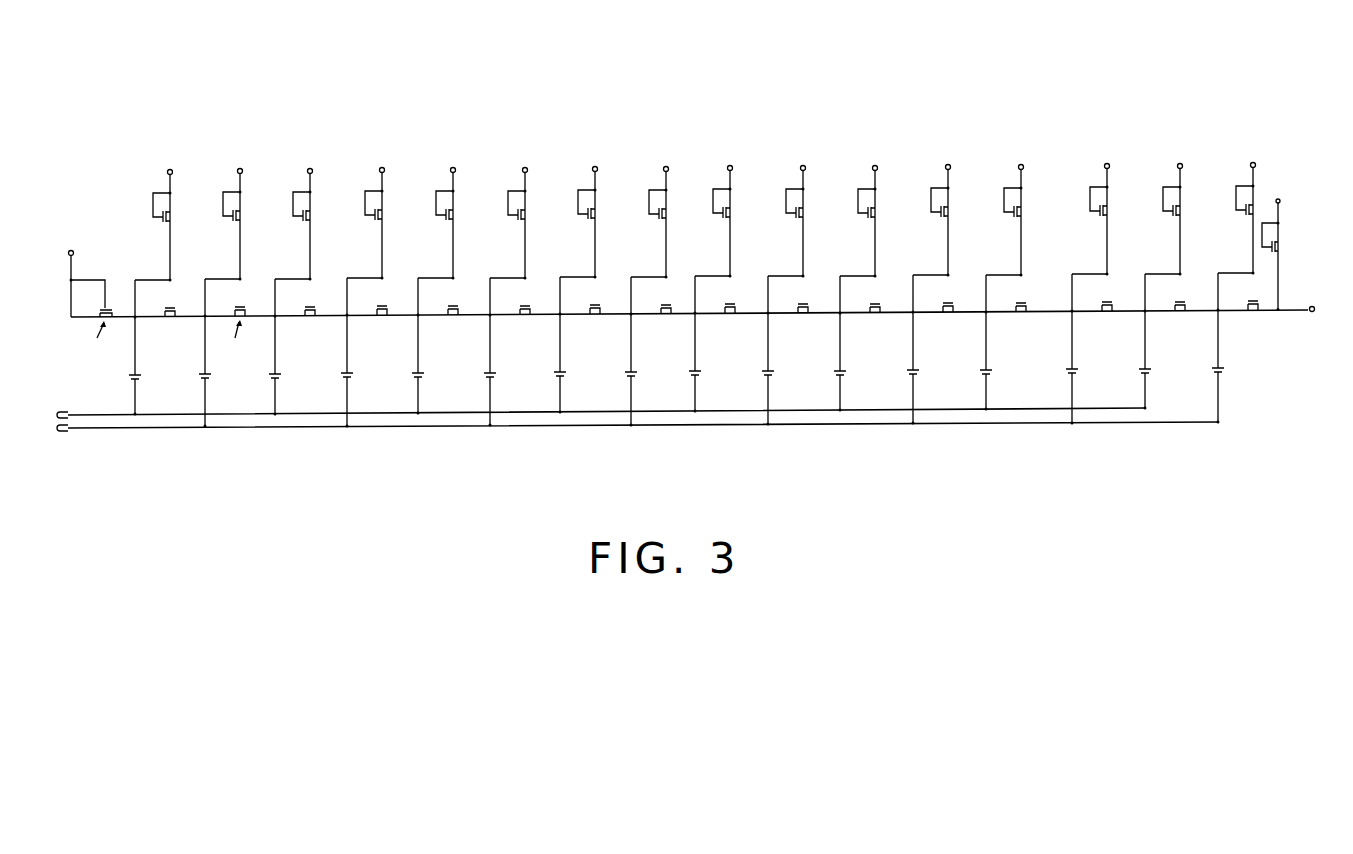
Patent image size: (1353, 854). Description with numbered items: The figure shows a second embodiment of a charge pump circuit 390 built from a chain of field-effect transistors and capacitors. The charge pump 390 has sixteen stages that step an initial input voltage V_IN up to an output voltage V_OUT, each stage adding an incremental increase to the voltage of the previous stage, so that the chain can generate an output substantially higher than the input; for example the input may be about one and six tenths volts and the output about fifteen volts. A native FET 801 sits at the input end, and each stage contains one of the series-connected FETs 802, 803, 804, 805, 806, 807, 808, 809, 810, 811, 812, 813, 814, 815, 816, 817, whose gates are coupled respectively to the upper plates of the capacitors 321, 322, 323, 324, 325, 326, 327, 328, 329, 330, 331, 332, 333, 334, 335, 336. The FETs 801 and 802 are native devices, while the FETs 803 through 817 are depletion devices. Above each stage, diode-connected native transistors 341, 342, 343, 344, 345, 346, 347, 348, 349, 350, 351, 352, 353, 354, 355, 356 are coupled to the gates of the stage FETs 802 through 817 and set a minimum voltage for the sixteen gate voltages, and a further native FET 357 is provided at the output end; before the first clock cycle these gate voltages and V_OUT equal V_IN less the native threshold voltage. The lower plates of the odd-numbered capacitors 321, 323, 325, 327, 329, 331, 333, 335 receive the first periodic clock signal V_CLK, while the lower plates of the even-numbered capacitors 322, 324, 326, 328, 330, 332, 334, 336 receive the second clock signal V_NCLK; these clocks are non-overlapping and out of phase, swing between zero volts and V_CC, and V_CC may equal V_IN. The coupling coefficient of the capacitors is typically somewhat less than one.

The charge pump circuit 390 is at (923, 65).
The field-effect transistor 801 is at (109, 308).
The field-effect transistor 802 is at (176, 307).
The field-effect transistor 803 is at (246, 307).
The field-effect transistor 804 is at (316, 307).
The field-effect transistor 805 is at (388, 307).
The field-effect transistor 806 is at (459, 307).
The field-effect transistor 807 is at (531, 307).
The field-effect transistor 808 is at (601, 307).
The field-effect transistor 809 is at (672, 307).
The field-effect transistor 810 is at (736, 307).
The field-effect transistor 811 is at (809, 307).
The field-effect transistor 812 is at (881, 307).
The field-effect transistor 813 is at (954, 307).
The field-effect transistor 814 is at (1027, 307).
The field-effect transistor 815 is at (1113, 307).
The field-effect transistor 816 is at (1186, 307).
The field-effect transistor 817 is at (1252, 318).
The diode-connected transistor 341 is at (171, 216).
The diode-connected transistor 342 is at (241, 216).
The diode-connected transistor 343 is at (311, 216).
The diode-connected transistor 344 is at (383, 216).
The diode-connected transistor 345 is at (454, 216).
The diode-connected transistor 346 is at (526, 216).
The diode-connected transistor 347 is at (596, 216).
The diode-connected transistor 348 is at (667, 216).
The diode-connected transistor 349 is at (731, 216).
The diode-connected transistor 350 is at (804, 216).
The diode-connected transistor 351 is at (876, 216).
The diode-connected transistor 352 is at (949, 216).
The diode-connected transistor 353 is at (1022, 216).
The diode-connected transistor 354 is at (1108, 216).
The diode-connected transistor 355 is at (1181, 216).
The diode-connected transistor 356 is at (1251, 224).
The field-effect transistor 357 is at (1282, 248).
The capacitor 321 is at (137, 374).
The capacitor 322 is at (207, 374).
The capacitor 323 is at (277, 374).
The capacitor 324 is at (349, 374).
The capacitor 325 is at (420, 374).
The capacitor 326 is at (492, 374).
The capacitor 327 is at (562, 374).
The capacitor 328 is at (633, 374).
The capacitor 329 is at (697, 374).
The capacitor 330 is at (770, 374).
The capacitor 331 is at (842, 374).
The capacitor 332 is at (915, 374).
The capacitor 333 is at (988, 374).
The capacitor 334 is at (1074, 374).
The capacitor 335 is at (1147, 374).
The capacitor 336 is at (1225, 380).